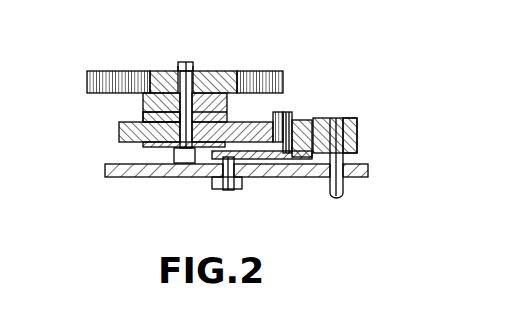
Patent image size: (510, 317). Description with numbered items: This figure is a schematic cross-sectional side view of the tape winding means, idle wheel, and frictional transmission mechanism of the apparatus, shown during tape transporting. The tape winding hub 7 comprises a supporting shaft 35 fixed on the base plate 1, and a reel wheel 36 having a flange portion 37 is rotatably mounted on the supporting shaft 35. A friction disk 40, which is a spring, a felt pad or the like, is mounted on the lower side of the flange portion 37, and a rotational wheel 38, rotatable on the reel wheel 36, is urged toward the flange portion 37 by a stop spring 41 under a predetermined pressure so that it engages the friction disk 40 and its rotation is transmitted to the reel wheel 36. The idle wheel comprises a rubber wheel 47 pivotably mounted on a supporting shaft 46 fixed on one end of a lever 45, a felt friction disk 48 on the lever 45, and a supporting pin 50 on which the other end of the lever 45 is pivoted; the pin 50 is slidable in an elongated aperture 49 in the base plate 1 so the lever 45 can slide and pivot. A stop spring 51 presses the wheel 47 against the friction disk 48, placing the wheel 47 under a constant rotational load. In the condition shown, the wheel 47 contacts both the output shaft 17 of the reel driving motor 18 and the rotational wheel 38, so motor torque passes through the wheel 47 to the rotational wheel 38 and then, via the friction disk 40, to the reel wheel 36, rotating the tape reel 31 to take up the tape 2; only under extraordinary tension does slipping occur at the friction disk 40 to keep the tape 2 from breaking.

The base plate 1 is at (113, 170).
The tape 2 is at (262, 72).
The tape winding hub 7 is at (172, 67).
The output shaft 17 is at (358, 141).
The reel driving motor 18 is at (405, 215).
The tape reel 31 is at (150, 70).
The supporting shaft 35 is at (177, 66).
The reel wheel 36 is at (195, 67).
The flange portion 37 is at (143, 100).
The rotational wheel 38 is at (120, 134).
The friction disk 40 is at (143, 113).
The stop spring 41 is at (145, 146).
The lever 45 is at (269, 160).
The supporting shaft 46 is at (288, 112).
The wheel 47 is at (276, 112).
The friction disk 48 is at (309, 168).
The elongated aperture 49 is at (212, 172).
The supporting pin 50 is at (231, 191).
The stop spring 51 is at (314, 118).